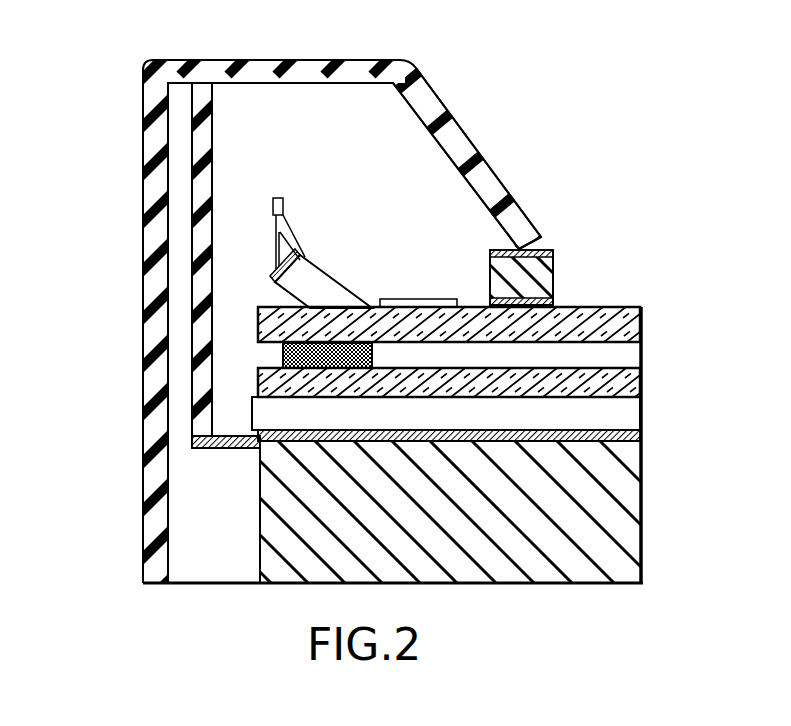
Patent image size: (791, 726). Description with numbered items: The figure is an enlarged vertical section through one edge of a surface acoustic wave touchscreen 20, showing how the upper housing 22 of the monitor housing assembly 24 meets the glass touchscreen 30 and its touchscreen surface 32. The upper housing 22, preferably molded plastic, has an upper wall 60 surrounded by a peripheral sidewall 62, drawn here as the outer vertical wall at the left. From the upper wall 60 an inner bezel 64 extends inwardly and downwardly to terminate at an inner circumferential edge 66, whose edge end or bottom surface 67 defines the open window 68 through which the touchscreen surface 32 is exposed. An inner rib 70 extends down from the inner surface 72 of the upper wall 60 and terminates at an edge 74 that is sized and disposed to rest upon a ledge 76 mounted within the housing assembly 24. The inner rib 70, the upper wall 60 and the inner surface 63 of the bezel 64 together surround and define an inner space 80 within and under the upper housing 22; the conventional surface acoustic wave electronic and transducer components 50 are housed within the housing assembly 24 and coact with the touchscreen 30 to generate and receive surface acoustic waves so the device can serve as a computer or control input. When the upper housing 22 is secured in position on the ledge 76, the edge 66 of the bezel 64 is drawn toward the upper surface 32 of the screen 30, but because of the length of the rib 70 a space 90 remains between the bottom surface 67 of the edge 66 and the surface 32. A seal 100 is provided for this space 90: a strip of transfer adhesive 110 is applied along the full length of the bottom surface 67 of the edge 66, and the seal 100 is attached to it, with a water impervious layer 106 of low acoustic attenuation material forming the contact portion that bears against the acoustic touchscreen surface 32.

The surface acoustic wave touchscreen 20 is at (511, 69).
The upper housing 22 is at (447, 103).
The monitor housing assembly 24 is at (115, 377).
The glass touchscreen 30 is at (645, 320).
The touchscreen surface 32 is at (640, 305).
The surface acoustic wave electronic and transducer components 50 is at (357, 247).
The upper wall 60 is at (340, 60).
The peripheral sidewall 62 is at (145, 283).
The inner surface of bezel 63 is at (433, 138).
The inner bezel 64 is at (485, 158).
The inner circumferential edge 66 is at (535, 232).
The bottom surface 67 is at (512, 250).
The open window 68 is at (597, 135).
The inner rib 70 is at (213, 143).
The inner surface of upper wall 72 is at (280, 86).
The edge of inner rib 74 is at (190, 447).
The ledge 76 is at (237, 448).
The inner space 80 is at (348, 173).
The space 90 is at (484, 261).
The seal 100 is at (553, 266).
The water impervious layer 106 is at (555, 305).
The transfer adhesive 110 is at (513, 244).